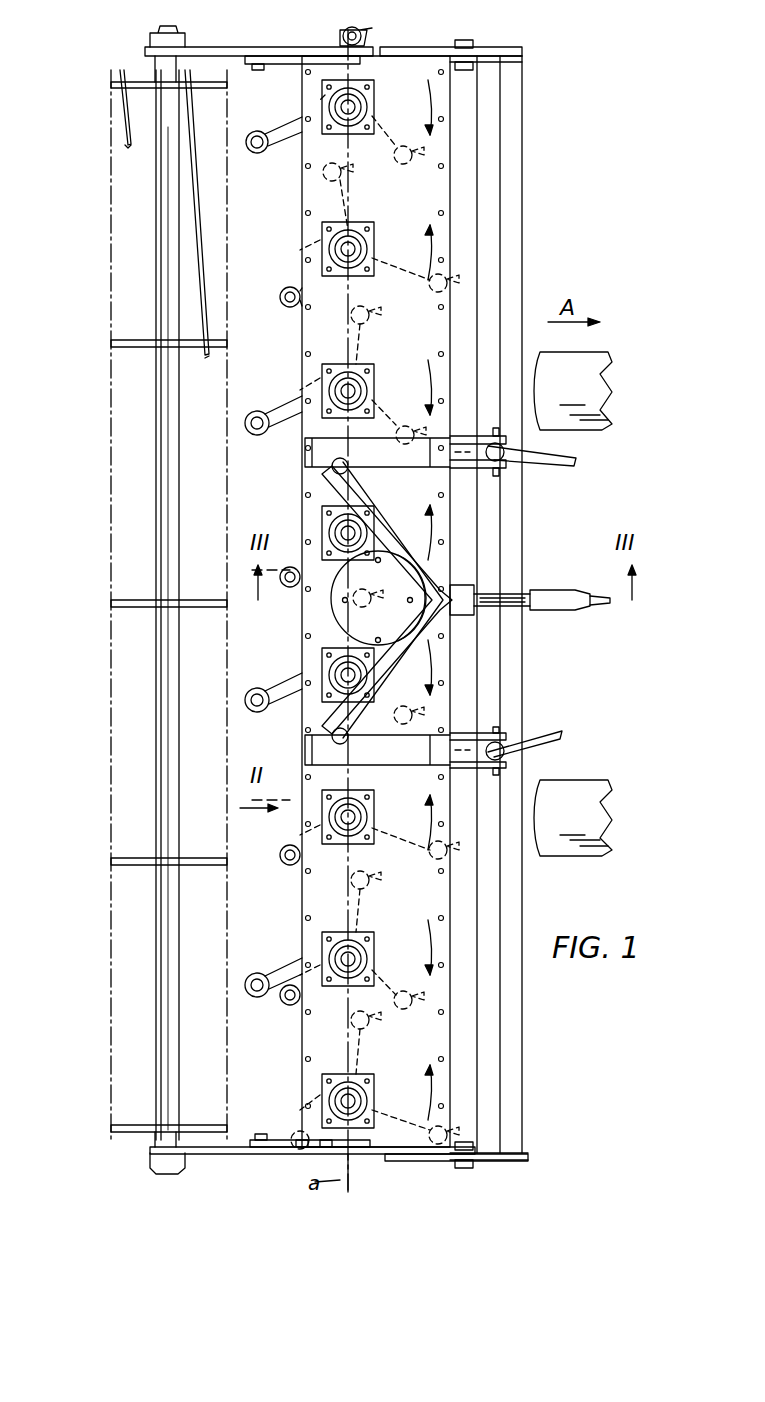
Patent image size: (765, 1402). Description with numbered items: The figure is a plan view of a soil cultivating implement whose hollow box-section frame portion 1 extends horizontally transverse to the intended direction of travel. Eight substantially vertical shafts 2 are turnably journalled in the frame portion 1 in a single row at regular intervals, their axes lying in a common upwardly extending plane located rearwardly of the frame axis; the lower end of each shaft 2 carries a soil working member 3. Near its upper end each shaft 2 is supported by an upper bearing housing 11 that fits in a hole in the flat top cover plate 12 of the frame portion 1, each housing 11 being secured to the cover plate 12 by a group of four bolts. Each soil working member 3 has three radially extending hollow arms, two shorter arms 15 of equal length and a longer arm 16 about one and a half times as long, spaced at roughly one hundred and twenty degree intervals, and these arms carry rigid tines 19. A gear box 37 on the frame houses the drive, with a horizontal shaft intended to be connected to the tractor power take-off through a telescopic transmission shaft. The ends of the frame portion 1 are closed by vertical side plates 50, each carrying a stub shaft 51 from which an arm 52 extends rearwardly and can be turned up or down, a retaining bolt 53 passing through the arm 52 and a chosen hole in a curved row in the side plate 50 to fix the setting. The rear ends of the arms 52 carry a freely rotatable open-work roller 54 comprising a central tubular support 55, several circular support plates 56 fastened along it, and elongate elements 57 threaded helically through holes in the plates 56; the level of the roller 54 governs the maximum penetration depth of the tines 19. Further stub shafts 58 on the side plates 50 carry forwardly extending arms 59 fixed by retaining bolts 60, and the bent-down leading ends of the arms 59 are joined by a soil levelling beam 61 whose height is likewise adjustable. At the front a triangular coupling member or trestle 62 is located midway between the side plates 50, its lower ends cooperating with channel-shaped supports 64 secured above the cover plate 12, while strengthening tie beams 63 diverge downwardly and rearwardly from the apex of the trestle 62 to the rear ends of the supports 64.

The hollow box-section frame portion 1 is at (300, 340).
The shaft 2 is at (380, 114).
The soil working member 3 is at (282, 292).
The upper bearing housing 11 is at (372, 240).
The top cover plate 12 is at (330, 880).
The shorter arm 15 is at (352, 176).
The longer arm 16 is at (262, 152).
The tine 19 is at (330, 615).
The gear box 37 is at (385, 605).
The side plate 50 is at (282, 66).
The stub shaft 51 is at (340, 40).
The arm 52 is at (148, 50).
The retaining bolt 53 is at (245, 46).
The roller 54 is at (108, 505).
The central support 55 is at (165, 393).
The support plate 56 is at (112, 345).
The elongate element 57 is at (126, 127).
The stub shaft 58 is at (404, 58).
The arm 59 is at (522, 58).
The retaining bolt 60 is at (470, 70).
The soil levelling beam 61 is at (515, 262).
The coupling member or trestle 62 is at (470, 523).
The strengthening tie beam 63 is at (385, 515).
The support 64 is at (305, 444).